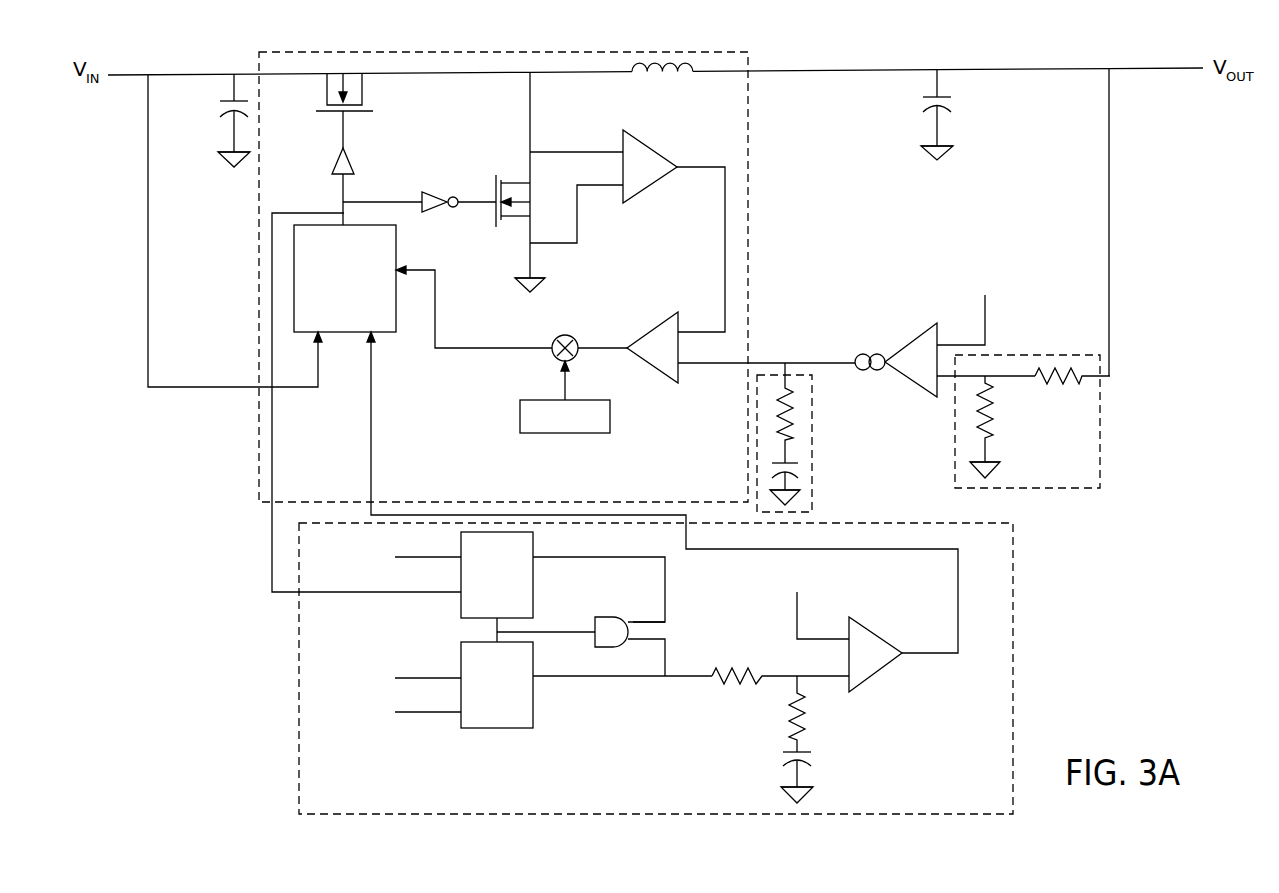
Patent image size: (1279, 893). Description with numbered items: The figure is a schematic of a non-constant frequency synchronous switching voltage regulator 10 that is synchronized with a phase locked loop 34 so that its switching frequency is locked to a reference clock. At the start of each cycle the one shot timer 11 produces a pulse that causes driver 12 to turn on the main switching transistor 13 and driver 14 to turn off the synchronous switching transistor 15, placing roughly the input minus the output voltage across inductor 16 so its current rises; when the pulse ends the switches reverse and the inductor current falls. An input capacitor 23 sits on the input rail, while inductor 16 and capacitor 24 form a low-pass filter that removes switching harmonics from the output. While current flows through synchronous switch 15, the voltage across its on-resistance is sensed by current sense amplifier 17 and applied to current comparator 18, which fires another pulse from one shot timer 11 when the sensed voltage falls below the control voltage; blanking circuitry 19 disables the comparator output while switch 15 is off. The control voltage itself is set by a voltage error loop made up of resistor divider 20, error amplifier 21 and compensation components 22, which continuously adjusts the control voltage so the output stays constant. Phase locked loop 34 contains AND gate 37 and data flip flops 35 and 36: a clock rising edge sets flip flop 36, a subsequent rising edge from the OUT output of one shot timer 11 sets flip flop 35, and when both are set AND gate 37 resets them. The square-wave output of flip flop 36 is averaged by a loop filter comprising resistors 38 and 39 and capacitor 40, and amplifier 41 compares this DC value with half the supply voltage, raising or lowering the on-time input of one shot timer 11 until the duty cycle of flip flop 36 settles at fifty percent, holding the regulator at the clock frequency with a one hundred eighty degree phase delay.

The switching regulator 10 is at (433, 52).
The one shot timer 11 is at (387, 332).
The driver 12 is at (352, 163).
The main switching transistor 13 is at (345, 88).
The driver 14 is at (430, 188).
The synchronous switching transistor 15 is at (513, 182).
The inductor 16 is at (668, 57).
The current sense amplifier 17 is at (657, 148).
The current comparator 18 is at (640, 335).
The blanking circuitry 19 is at (612, 415).
The resistor divider 20 is at (955, 458).
The error amplifier 21 is at (907, 347).
The compensation components 22 is at (812, 472).
The input capacitor 23 is at (233, 126).
The capacitor 24 is at (937, 130).
The phase locked loop 34 is at (298, 650).
The data flip flop 35 is at (533, 587).
The data flip flop 36 is at (533, 703).
The AND gate 37 is at (617, 615).
The resistor 38 is at (723, 682).
The resistor 39 is at (802, 730).
The capacitor 40 is at (802, 760).
The amplifier 41 is at (877, 675).